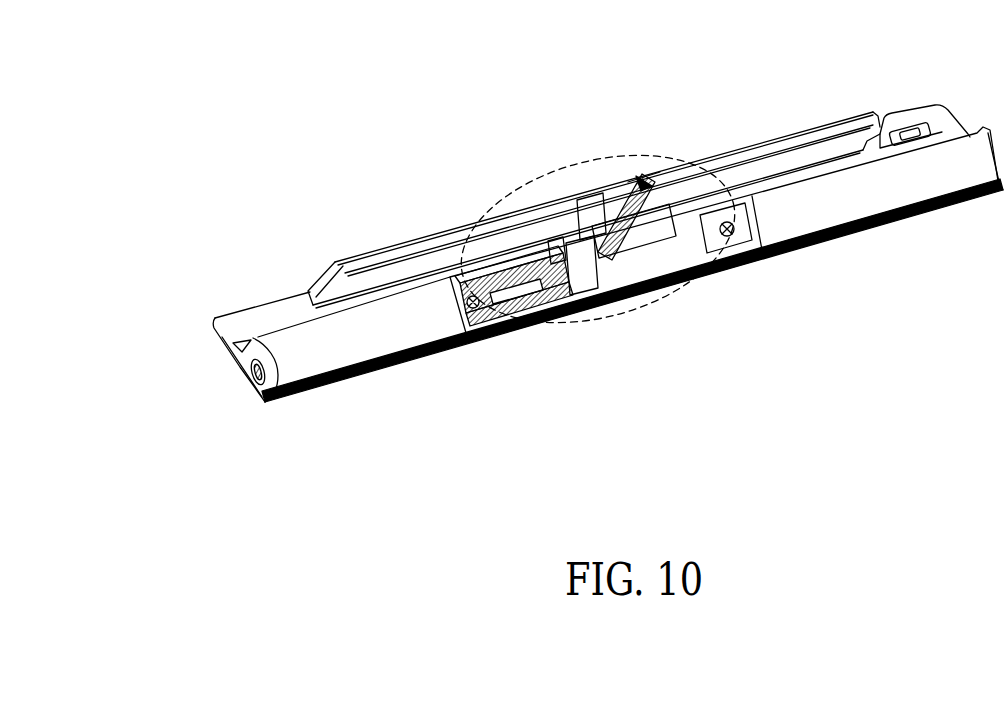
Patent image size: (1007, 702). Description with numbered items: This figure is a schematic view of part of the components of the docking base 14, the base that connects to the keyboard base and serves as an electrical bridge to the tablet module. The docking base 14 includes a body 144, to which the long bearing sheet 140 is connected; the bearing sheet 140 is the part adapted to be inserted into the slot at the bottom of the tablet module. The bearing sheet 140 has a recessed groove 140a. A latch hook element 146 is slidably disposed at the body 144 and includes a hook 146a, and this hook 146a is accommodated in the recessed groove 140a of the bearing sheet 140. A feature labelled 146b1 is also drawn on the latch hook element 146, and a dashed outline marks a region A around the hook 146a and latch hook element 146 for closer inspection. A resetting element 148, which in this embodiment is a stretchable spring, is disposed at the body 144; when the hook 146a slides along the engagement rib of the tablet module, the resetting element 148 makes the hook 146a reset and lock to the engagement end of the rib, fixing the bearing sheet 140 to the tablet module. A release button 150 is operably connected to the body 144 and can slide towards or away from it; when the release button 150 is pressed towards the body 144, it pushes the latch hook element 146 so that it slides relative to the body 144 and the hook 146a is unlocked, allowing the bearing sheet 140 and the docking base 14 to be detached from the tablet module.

The docking base 14 is at (311, 197).
The bearing sheet 140 is at (838, 113).
The recessed groove 140a is at (668, 170).
The body 144 is at (246, 363).
The latch hook element 146 is at (545, 238).
The hook 146a is at (620, 190).
The lever pivot block 146b1 is at (578, 218).
The resetting element 148 is at (507, 238).
The release button 150 is at (630, 260).
The detail region A is at (706, 281).